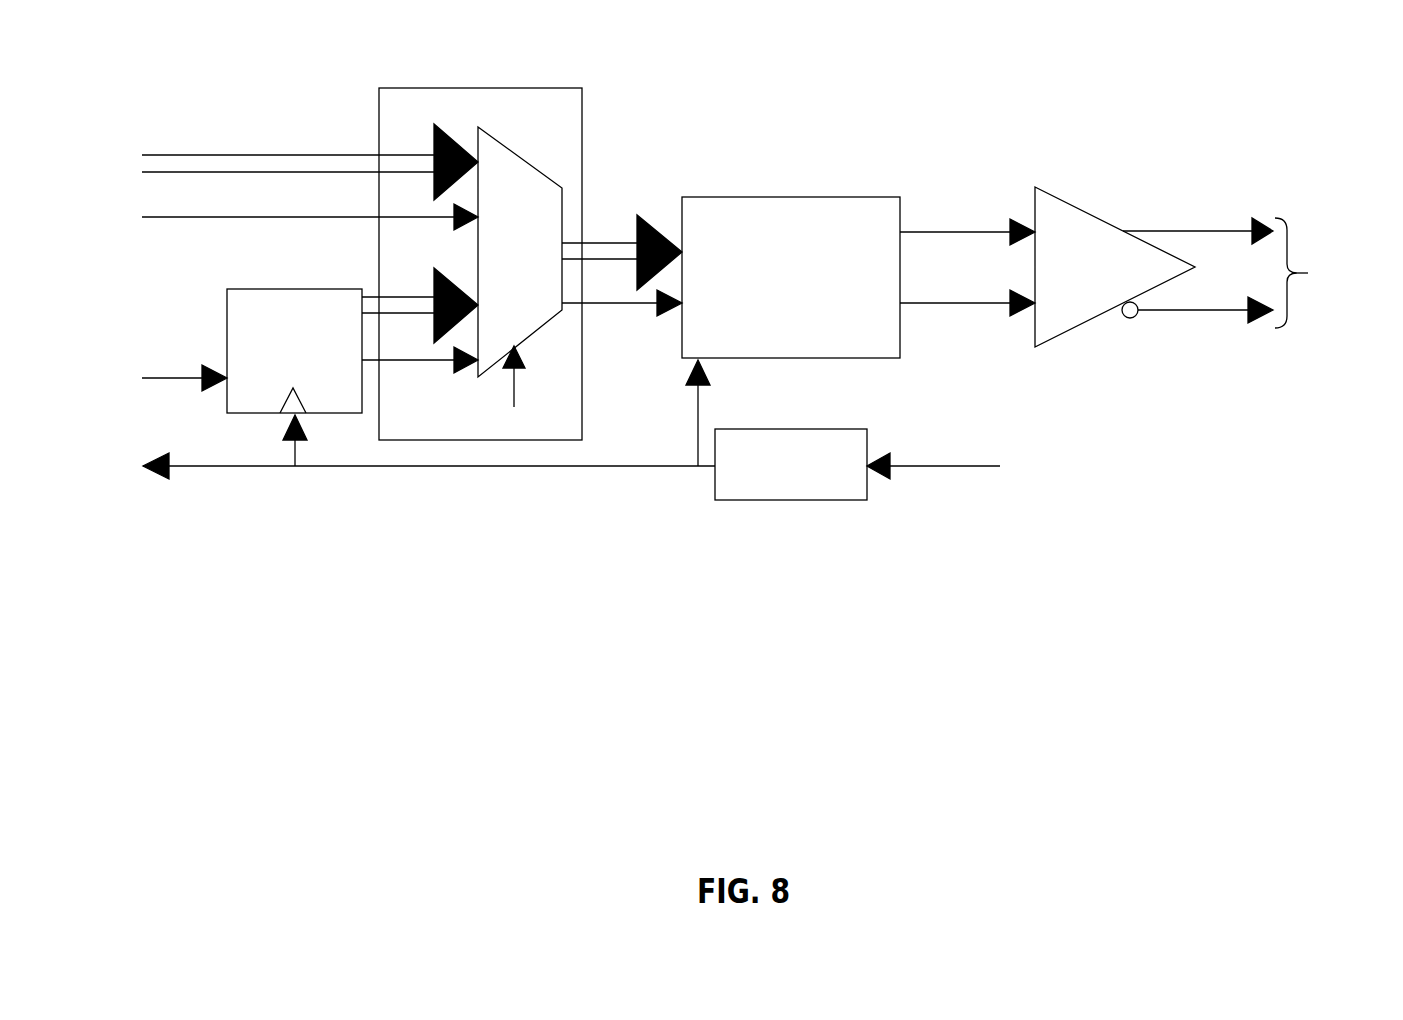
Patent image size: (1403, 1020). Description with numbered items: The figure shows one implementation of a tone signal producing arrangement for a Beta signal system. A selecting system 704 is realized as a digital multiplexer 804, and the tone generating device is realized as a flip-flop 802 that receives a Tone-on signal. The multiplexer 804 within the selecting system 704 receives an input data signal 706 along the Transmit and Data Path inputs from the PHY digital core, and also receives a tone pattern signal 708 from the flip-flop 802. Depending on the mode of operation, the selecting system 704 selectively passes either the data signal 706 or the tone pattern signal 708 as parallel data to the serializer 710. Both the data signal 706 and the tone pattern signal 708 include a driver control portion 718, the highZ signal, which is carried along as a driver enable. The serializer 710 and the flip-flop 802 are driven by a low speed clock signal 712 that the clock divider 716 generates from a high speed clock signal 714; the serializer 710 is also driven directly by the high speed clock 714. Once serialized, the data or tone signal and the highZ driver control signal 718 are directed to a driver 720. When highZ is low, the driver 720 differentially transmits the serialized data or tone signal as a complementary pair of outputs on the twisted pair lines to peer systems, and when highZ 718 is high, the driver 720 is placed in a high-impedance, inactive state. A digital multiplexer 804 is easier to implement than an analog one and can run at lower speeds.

The selecting system 704 is at (418, 88).
The multiplexer 804 is at (505, 146).
The input data signal 706 is at (317, 217).
The tone pattern signal 708 is at (428, 313).
The flip-flop 802 is at (236, 289).
The serializer 710 is at (780, 197).
The low speed clock signal 712 is at (700, 428).
The high speed clock signal 714 is at (943, 466).
The clock divider 716 is at (805, 429).
The driver control portion 718 is at (940, 305).
The driver 720 is at (1065, 330).